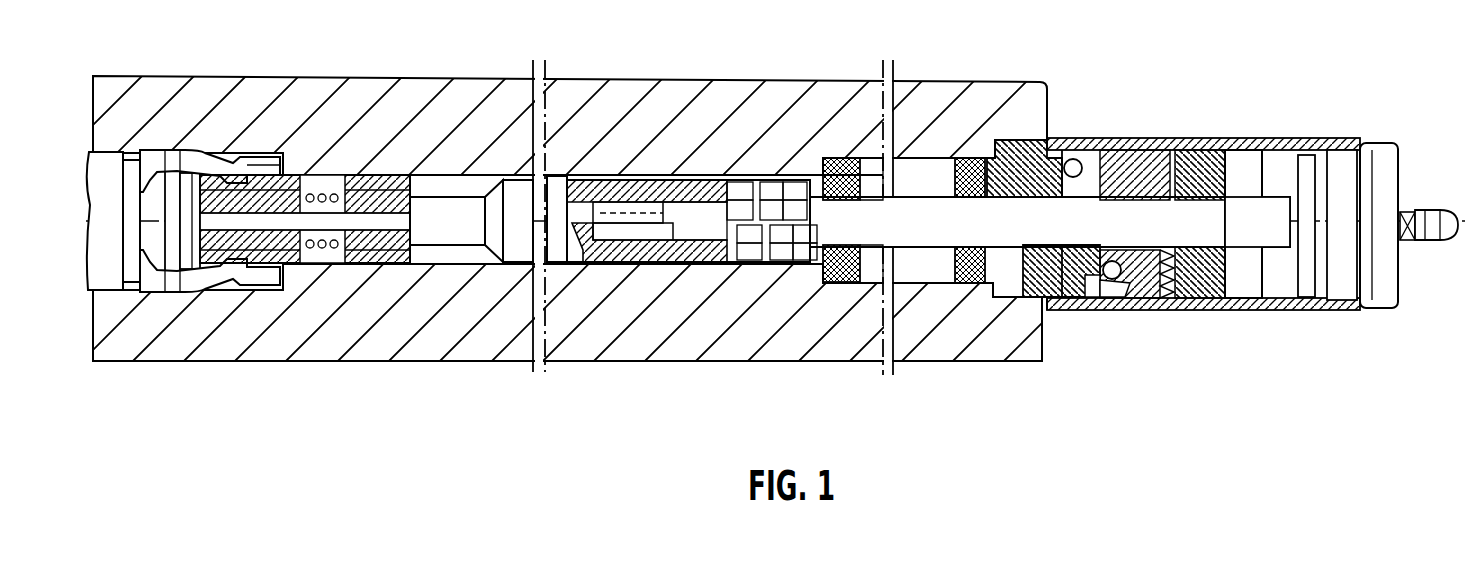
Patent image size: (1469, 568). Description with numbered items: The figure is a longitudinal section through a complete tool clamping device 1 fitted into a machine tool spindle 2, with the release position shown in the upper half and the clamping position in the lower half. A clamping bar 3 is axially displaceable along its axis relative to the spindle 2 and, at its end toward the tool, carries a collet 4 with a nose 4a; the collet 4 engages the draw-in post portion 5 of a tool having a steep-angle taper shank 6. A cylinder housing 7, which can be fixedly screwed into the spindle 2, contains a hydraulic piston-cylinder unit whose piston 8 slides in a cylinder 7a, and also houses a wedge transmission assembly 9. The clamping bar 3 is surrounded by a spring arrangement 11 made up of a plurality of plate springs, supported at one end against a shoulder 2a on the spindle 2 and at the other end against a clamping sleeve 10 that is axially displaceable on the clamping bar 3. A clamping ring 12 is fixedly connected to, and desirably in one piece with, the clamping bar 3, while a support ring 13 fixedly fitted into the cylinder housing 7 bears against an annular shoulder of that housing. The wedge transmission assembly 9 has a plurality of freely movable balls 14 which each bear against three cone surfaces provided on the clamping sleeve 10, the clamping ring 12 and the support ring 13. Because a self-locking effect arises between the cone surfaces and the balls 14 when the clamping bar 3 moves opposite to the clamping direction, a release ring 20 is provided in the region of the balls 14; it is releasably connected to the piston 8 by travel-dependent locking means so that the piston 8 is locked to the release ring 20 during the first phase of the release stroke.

The tool clamping device 1 is at (703, 173).
The machine tool spindle 2 is at (113, 153).
The shoulder 2a is at (817, 163).
The clamping bar 3 is at (512, 183).
The collet 4 is at (187, 147).
The clamping jaw nose 4a is at (215, 163).
The draw-in post portion 5 is at (193, 272).
The steep-angle taper shank 6 is at (108, 272).
The cylinder housing 7 is at (1187, 145).
The cylinder 7a is at (1263, 150).
The piston 8 is at (1230, 142).
The wedge transmission assembly 9 is at (1133, 293).
The clamping sleeve 10 is at (1068, 263).
The spring arrangement 11 is at (953, 173).
The clamping ring 12 is at (1170, 310).
The support ring 13 is at (1092, 300).
The balls 14 is at (1113, 303).
The release ring 20 is at (1105, 150).